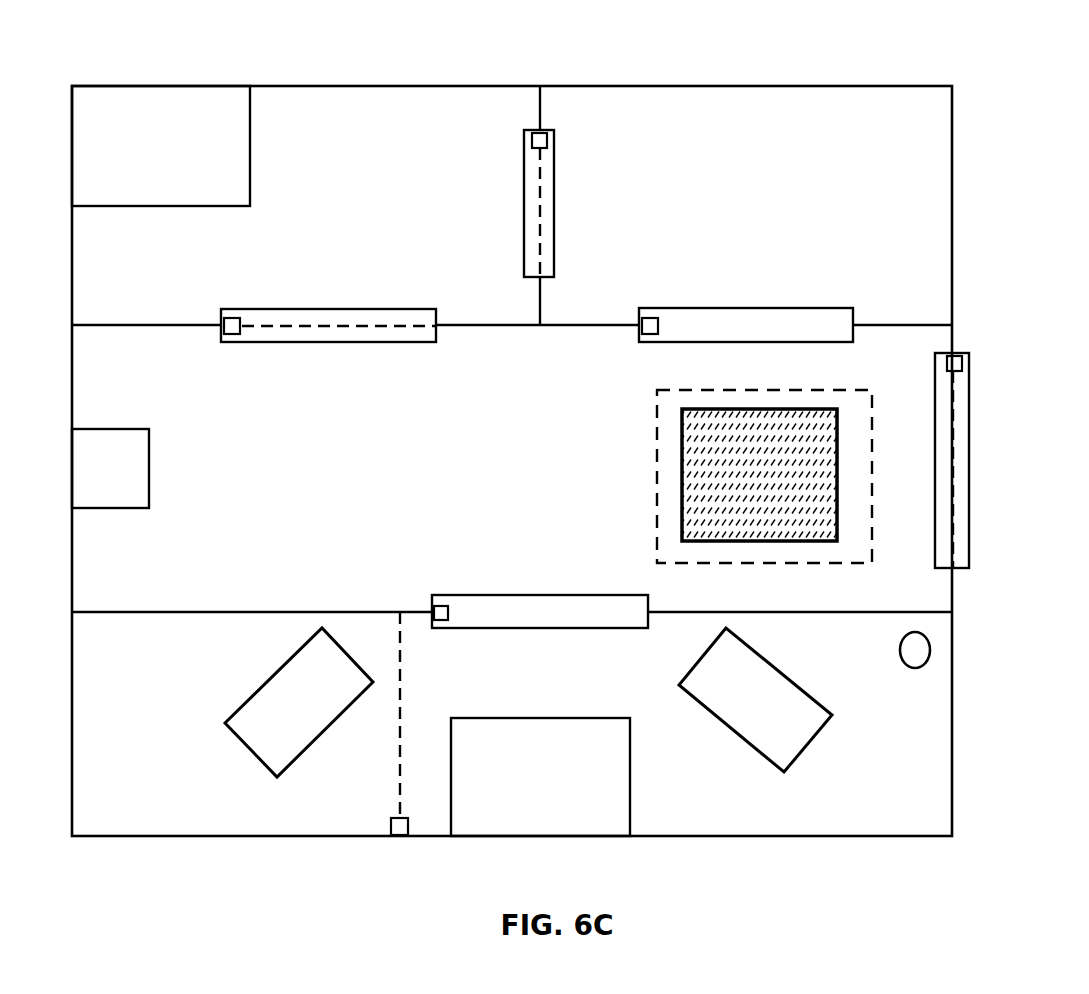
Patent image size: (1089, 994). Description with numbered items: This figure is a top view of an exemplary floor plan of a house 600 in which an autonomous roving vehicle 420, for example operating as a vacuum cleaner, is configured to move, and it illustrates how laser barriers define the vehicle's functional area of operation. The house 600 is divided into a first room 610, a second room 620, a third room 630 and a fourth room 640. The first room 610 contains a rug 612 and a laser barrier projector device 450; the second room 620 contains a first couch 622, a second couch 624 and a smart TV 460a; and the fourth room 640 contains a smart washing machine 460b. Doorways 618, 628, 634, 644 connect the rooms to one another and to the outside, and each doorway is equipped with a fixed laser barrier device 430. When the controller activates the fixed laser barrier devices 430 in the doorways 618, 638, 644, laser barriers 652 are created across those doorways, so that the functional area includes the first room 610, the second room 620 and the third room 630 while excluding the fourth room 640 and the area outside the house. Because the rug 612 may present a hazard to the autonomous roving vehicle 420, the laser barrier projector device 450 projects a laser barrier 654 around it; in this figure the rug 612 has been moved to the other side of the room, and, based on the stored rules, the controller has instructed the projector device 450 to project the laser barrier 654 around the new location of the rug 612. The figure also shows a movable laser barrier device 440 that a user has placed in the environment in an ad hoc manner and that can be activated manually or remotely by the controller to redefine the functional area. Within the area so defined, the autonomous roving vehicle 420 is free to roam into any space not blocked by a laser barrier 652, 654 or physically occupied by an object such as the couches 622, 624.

The house 600 is at (512, 425).
The first room 610 is at (252, 468).
The second room 620 is at (522, 633).
The third room 630 is at (902, 213).
The fourth room 640 is at (537, 205).
The smart TV 460a is at (540, 777).
The smart washing machine 460b is at (161, 146).
The laser barrier projector device 450 is at (110, 509).
The fixed laser barrier device 430 is at (232, 316).
The laser barrier 652 is at (267, 322).
The doorway 644 is at (372, 309).
The doorway 638 is at (555, 189).
The doorway 634 is at (795, 308).
The doorway 618 is at (969, 478).
The doorway 628 is at (465, 595).
The laser barrier 654 is at (657, 440).
The rug 612 is at (682, 481).
The first couch 622 is at (240, 742).
The second couch 624 is at (815, 742).
The movable laser barrier device 440 is at (390, 822).
The autonomous roving vehicle 420 is at (930, 648).